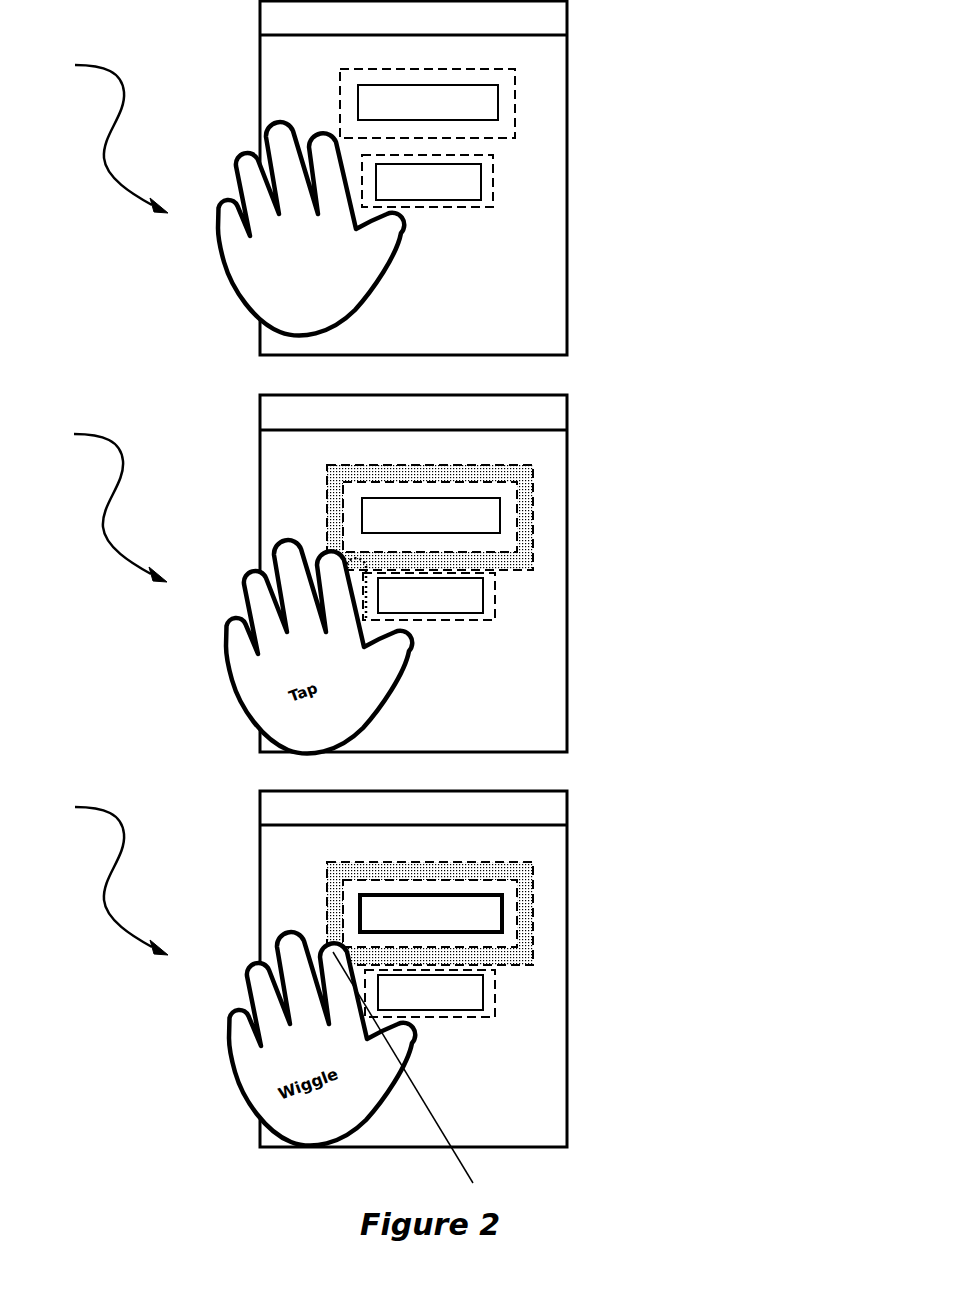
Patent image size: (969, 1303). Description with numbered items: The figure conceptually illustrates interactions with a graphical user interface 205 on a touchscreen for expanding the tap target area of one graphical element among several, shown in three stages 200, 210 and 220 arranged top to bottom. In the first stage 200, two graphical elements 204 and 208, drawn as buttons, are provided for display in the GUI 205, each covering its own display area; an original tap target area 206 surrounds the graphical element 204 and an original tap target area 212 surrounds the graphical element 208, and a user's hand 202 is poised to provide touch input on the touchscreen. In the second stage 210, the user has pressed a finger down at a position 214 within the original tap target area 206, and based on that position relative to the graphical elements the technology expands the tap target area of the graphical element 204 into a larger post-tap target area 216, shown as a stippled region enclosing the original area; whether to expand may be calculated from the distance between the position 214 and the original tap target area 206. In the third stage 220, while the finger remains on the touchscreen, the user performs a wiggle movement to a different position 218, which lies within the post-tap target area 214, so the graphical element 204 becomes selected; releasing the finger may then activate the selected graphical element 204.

The first stage 200 is at (68, 74).
The user's hand 202 is at (372, 290).
The graphical element 204 is at (498, 100).
The graphical user interface 205 is at (559, 348).
The original tap target area 206 is at (475, 75).
The graphical element 208 is at (483, 207).
The second stage 210 is at (68, 442).
The original tap target area 212 is at (483, 182).
The position / post-tap target area 214 is at (527, 870).
The post-tap target area 216 is at (525, 473).
The position 218 is at (417, 1079).
The third stage 220 is at (68, 816).